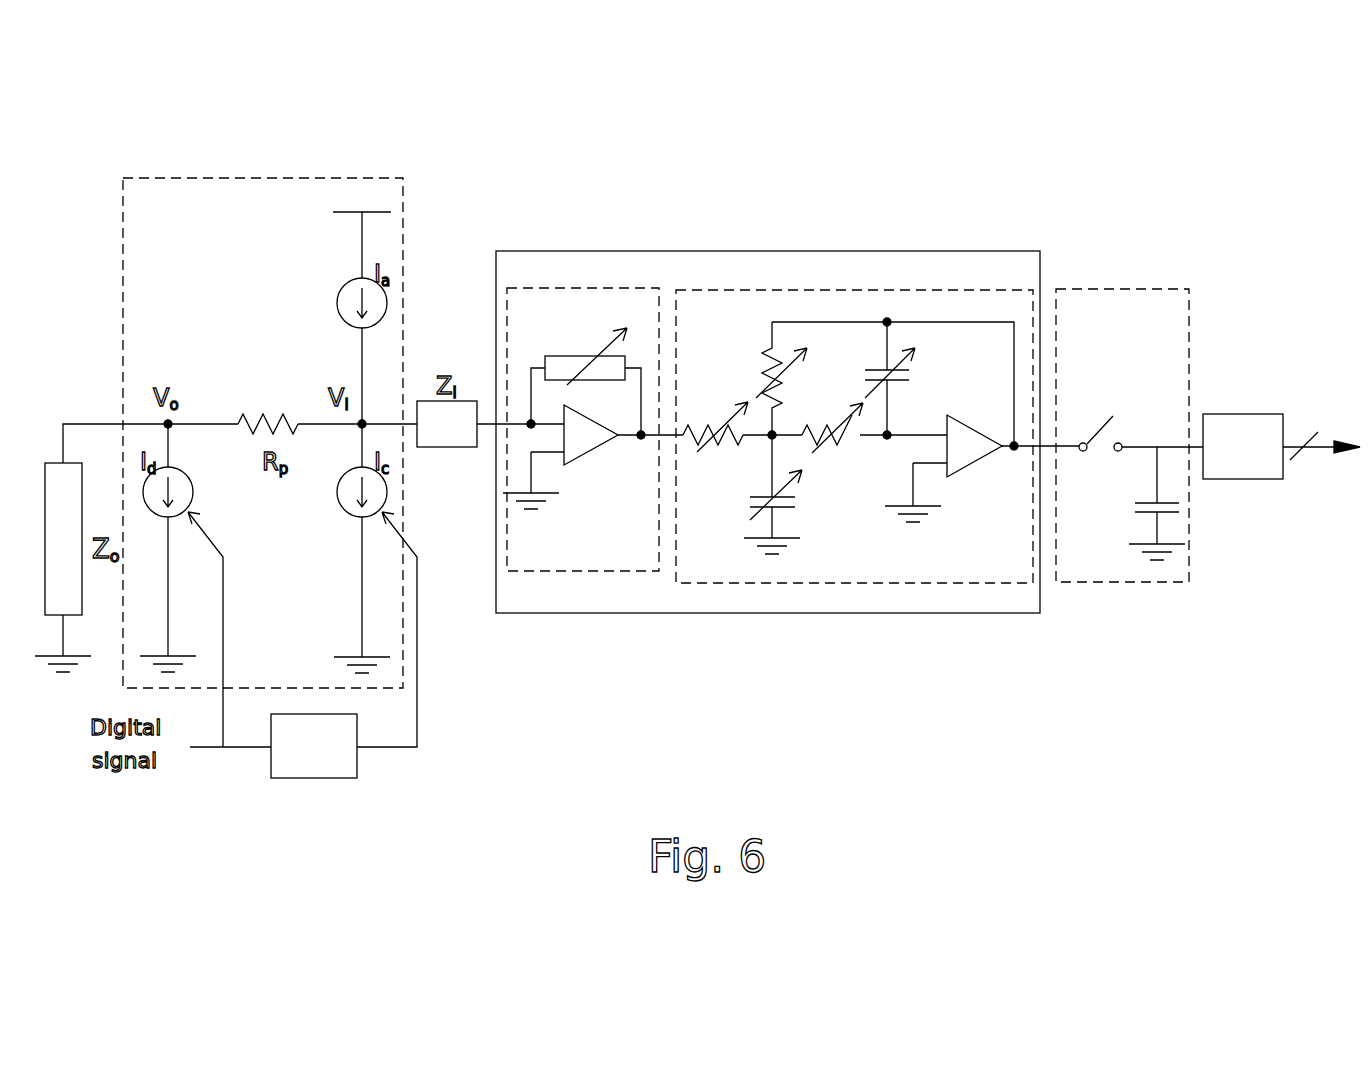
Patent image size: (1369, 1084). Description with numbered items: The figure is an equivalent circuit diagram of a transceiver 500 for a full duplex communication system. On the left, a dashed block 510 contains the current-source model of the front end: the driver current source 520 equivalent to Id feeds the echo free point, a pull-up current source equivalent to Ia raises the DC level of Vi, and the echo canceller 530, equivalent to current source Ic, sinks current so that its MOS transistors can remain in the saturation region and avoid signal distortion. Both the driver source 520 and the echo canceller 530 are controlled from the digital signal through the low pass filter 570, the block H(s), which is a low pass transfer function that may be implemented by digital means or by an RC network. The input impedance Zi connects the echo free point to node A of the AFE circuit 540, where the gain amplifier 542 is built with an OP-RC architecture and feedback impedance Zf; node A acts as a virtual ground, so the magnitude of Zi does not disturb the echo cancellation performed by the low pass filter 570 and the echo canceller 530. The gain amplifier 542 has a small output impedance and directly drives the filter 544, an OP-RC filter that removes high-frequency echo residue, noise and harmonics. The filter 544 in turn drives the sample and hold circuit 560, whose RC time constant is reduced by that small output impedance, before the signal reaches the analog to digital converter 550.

The transceiver 500 is at (1042, 705).
The input stage / sensor circuit 510 is at (365, 178).
The current source Id 520 is at (193, 489).
The echo canceller 530 is at (387, 489).
The AFE circuit 540 is at (528, 251).
The gain amplifier 542 is at (637, 288).
The filter 544 is at (933, 290).
The analog to digital converter 550 is at (1239, 414).
The sample and hold circuit 560 is at (1127, 289).
The low pass filter 570 is at (297, 778).